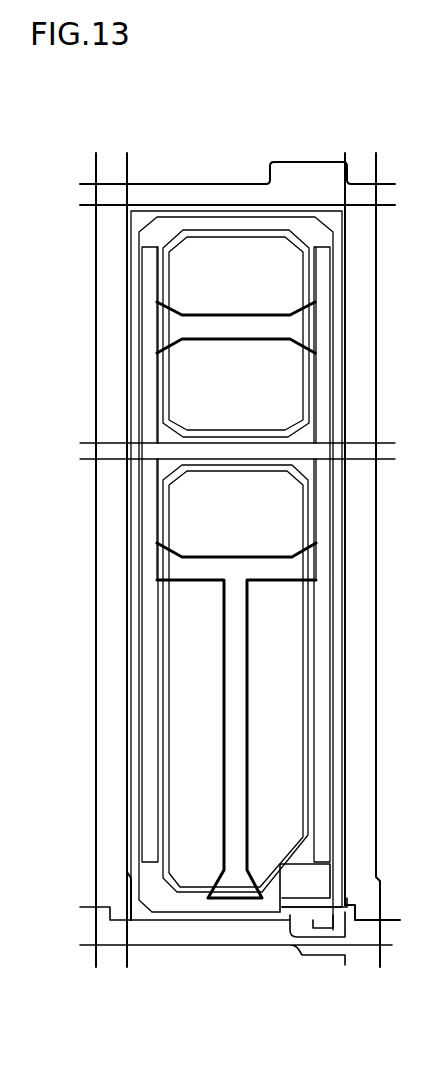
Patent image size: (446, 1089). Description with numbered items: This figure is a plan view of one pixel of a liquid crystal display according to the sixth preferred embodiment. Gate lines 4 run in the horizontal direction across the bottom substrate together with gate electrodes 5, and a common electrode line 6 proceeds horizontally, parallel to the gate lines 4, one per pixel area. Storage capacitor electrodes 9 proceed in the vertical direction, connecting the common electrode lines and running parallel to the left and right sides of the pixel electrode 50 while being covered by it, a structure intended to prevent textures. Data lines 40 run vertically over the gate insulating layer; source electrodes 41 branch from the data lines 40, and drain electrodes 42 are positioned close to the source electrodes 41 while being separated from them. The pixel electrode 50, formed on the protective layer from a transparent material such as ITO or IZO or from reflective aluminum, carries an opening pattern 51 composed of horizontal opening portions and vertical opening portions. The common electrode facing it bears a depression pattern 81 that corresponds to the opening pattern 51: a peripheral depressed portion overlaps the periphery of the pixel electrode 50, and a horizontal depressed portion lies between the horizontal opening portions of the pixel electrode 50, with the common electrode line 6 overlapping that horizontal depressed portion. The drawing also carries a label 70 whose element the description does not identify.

The gate line 4 is at (228, 945).
The gate electrode 5 is at (357, 912).
The common electrode line 6 is at (310, 447).
The storage capacitor electrode 9 is at (130, 488).
The data line 40 is at (375, 732).
The source electrode 41 is at (298, 945).
The drain electrode 42 is at (323, 876).
The pixel electrode 50 is at (138, 864).
The opening pattern 51 is at (298, 321).
The slit pattern outer edge 70 is at (304, 378).
The depression pattern 81 is at (205, 431).